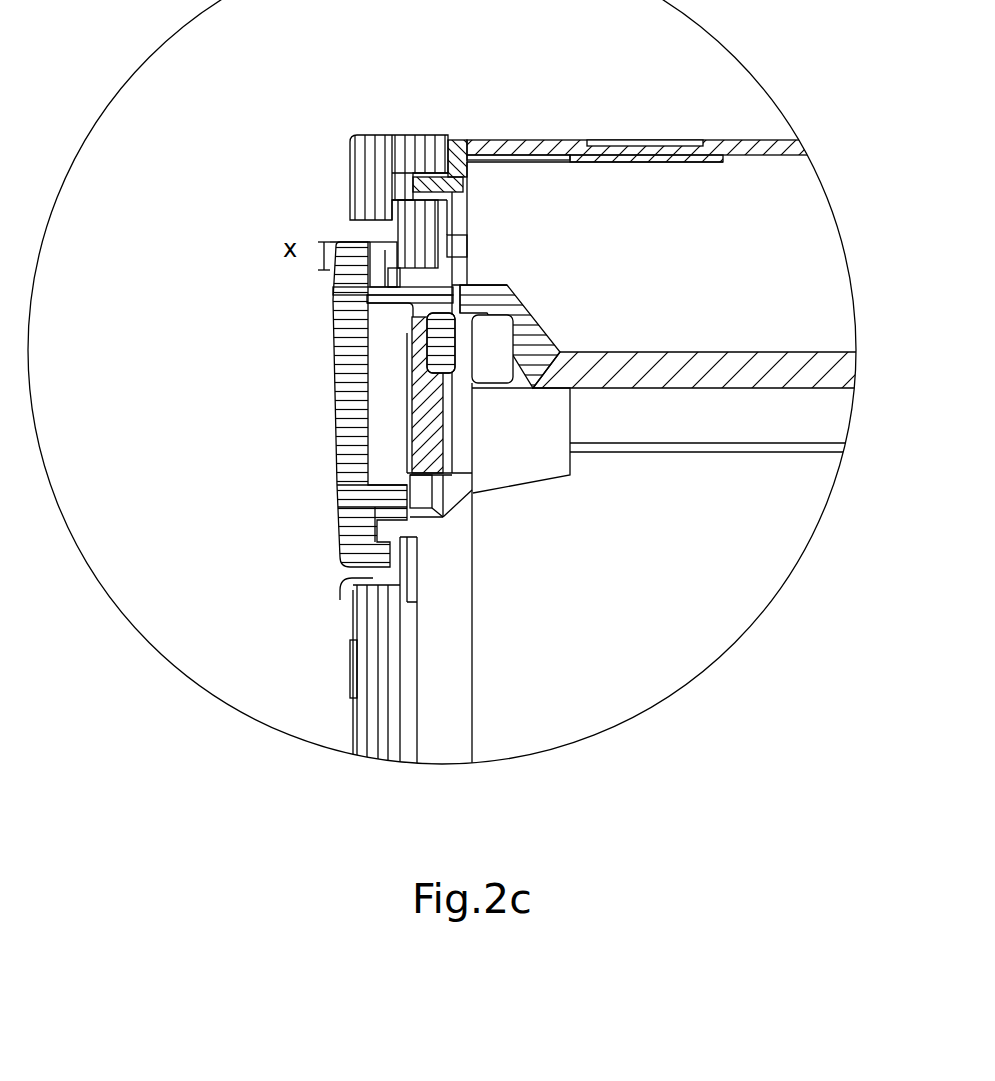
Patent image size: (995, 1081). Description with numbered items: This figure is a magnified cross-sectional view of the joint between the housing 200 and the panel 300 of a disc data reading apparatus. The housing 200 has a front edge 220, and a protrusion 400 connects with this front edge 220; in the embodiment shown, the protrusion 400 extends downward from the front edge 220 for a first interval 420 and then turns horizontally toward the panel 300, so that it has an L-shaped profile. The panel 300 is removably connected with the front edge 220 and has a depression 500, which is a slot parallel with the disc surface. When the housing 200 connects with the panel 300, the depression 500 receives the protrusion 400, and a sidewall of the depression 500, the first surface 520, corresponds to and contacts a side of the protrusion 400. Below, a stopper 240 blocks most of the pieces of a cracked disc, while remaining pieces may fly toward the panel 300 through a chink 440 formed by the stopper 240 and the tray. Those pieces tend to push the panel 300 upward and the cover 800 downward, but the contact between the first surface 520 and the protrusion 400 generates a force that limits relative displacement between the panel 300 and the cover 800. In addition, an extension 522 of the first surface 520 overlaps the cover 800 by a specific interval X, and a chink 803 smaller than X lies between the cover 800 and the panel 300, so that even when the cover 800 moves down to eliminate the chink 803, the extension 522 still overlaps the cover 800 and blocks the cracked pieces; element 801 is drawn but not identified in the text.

The housing 200 is at (548, 140).
The front edge 220 is at (462, 140).
The first interval 420 is at (470, 140).
The protrusion 400 is at (418, 176).
The first surface 520 is at (377, 142).
The panel 300 is at (367, 167).
The depression 500 is at (397, 187).
The chink 440 is at (452, 278).
The extension 522 is at (453, 227).
The stopper 240 is at (425, 273).
The clamp 801 is at (405, 300).
The cover 800 is at (355, 467).
The chink 803 is at (373, 578).